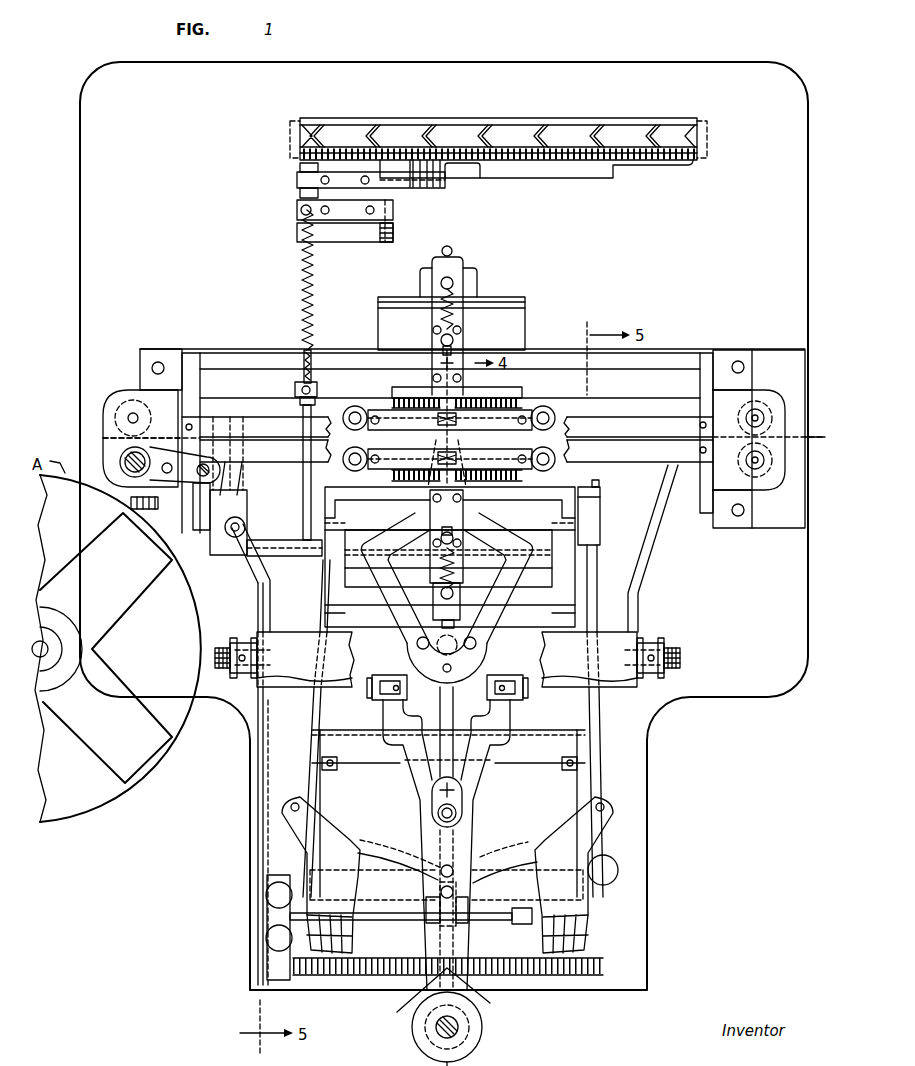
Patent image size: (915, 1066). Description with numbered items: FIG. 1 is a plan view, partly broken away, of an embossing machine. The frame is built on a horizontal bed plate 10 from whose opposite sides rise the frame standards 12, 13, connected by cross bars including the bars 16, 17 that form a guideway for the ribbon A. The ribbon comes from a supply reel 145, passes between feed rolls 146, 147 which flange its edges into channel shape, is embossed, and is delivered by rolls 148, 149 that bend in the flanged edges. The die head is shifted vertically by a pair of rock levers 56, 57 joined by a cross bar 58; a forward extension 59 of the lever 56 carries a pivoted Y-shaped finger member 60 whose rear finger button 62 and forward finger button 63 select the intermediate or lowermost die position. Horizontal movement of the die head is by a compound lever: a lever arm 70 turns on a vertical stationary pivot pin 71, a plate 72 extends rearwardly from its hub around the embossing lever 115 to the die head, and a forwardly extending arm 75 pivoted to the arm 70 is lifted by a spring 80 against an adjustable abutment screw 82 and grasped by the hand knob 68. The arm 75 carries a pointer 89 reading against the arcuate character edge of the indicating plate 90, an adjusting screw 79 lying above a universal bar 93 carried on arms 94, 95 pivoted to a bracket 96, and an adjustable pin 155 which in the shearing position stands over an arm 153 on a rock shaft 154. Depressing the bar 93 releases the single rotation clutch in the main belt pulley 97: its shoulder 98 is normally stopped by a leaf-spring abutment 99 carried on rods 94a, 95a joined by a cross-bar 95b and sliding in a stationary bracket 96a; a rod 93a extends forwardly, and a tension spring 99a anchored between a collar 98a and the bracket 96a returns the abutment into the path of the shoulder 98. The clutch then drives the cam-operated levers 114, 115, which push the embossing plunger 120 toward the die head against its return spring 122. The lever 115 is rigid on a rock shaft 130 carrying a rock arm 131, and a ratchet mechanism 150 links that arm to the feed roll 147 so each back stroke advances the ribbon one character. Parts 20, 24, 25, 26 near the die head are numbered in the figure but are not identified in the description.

The bed plate 10 is at (633, 875).
The frame standard 12 is at (190, 377).
The frame standard 13 is at (702, 377).
The cross bar 16 is at (408, 429).
The cross bar 17 is at (456, 451).
The carriage 20 is at (522, 402).
The carriage rollers 24 is at (352, 450).
The upper rack 25 is at (495, 405).
The lower rack 26 is at (507, 480).
The rock lever 56 is at (271, 593).
The rock lever 57 is at (645, 561).
The cross bar 58 is at (447, 659).
The forward extension of lever 59 is at (257, 860).
The Y-shaped finger member 60 is at (288, 917).
The finger button 62 is at (266, 896).
The forward finger button 63 is at (266, 940).
The hand knob 68 is at (476, 1018).
The lever arm 70 is at (457, 838).
The vertical stationary pivot pin 71 is at (473, 658).
The plate 72 is at (450, 585).
The forwardly extending arm 75 is at (447, 832).
The adjusting screw 79 is at (454, 892).
The spring 80 is at (463, 789).
The adjustable abutment screw 82 is at (463, 813).
The pointer 89 is at (430, 1006).
The indicating plate 90 is at (597, 909).
The universal bar 93 is at (519, 880).
The arm 94 is at (322, 600).
The arm 95 is at (592, 712).
The bracket 96 is at (565, 620).
The main belt pulley 97 is at (632, 102).
The shoulder 98 is at (460, 170).
The slidable abutment 99 is at (403, 185).
The rod 93a is at (297, 195).
The rod 94a is at (393, 225).
The rod 95a is at (302, 332).
The cross-bar 95b is at (367, 237).
The stationary bracket 96a is at (347, 212).
The collar 98a is at (318, 390).
The tension spring 99a is at (313, 320).
The lever 114 is at (457, 270).
The embossing lever 115 is at (455, 600).
The embossing plunger 120 is at (452, 348).
The spring 122 is at (478, 300).
The rock shaft 130 is at (273, 547).
The rock arm 131 is at (203, 517).
The reel 145 is at (116, 648).
The roll 146 is at (132, 400).
The roll 147 is at (107, 445).
The roll 148 is at (766, 402).
The roll 149 is at (760, 478).
The ratchet mechanism 150 is at (137, 477).
The arm 153 is at (410, 922).
The rock shaft 154 is at (373, 920).
The adjustable pin 155 is at (442, 867).